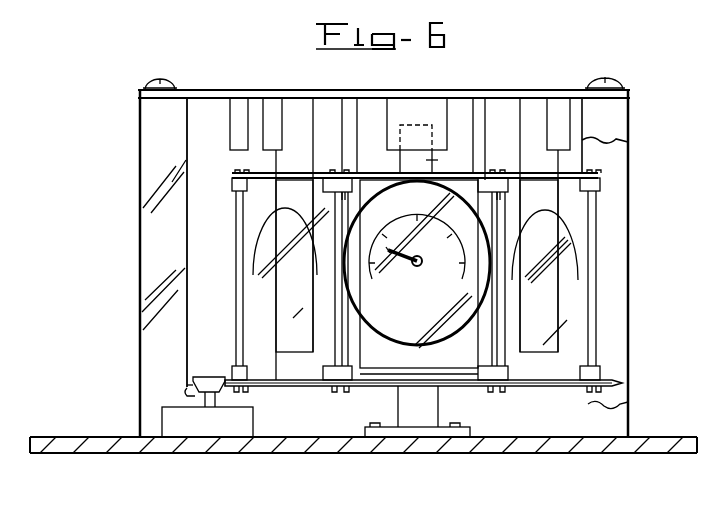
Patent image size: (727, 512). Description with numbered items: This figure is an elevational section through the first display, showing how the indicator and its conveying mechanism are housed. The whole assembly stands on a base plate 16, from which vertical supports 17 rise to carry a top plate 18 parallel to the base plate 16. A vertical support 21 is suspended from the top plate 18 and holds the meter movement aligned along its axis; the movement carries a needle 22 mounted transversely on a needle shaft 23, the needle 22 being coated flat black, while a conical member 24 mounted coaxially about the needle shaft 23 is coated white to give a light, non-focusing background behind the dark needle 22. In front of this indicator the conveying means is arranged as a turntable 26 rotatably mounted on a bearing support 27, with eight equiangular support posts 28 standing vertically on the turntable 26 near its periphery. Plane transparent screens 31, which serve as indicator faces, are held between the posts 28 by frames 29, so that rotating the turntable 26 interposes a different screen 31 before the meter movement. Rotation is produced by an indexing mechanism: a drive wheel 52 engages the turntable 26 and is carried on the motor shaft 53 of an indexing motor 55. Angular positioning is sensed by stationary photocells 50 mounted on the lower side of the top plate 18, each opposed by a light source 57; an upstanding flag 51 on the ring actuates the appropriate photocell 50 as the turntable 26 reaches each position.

The base plate 16 is at (310, 440).
The vertical supports 17 is at (172, 142).
The top plate 18 is at (208, 95).
The vertical support 21 is at (462, 107).
The needle 22 is at (400, 254).
The needle shaft 23 is at (421, 265).
The conical member 24 is at (373, 347).
The turntable 26 is at (300, 387).
The bearing support 27 is at (427, 414).
The support posts 28 is at (333, 178).
The frames 29 is at (348, 378).
The transparent screens 31 is at (276, 368).
The photocells 50 is at (237, 103).
The flag 51 is at (443, 160).
The drive wheel 52 is at (212, 378).
The motor shaft 53 is at (189, 392).
The indexing motor 55 is at (188, 430).
The light source 57 is at (274, 103).